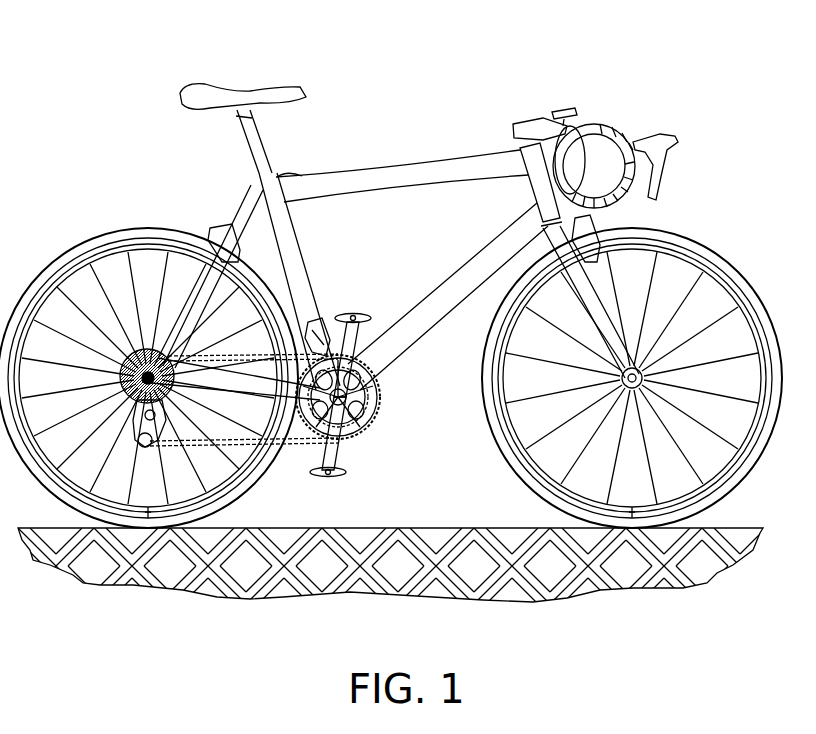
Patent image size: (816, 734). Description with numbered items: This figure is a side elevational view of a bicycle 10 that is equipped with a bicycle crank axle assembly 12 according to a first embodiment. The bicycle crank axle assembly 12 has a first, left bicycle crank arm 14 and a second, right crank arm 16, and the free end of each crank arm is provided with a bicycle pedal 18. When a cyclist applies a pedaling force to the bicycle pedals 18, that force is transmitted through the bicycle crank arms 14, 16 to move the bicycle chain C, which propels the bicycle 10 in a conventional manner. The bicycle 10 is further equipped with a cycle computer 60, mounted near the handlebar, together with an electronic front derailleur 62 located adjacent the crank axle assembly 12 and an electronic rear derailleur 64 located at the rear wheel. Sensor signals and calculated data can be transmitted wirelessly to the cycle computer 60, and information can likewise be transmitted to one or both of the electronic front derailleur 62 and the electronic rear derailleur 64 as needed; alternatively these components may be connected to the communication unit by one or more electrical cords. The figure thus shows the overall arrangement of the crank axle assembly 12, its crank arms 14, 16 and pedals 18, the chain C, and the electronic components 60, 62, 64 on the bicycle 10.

The bicycle 10 is at (391, 274).
The bicycle crank axle assembly 12 is at (396, 420).
The first bicycle crank arm 14 is at (366, 338).
The second crank arm 16 is at (345, 457).
The bicycle pedal 18 is at (356, 314).
The cycle computer 60 is at (565, 108).
The electronic front derailleur 62 is at (329, 326).
The electronic rear derailleur 64 is at (130, 393).
The bicycle chain C is at (300, 447).